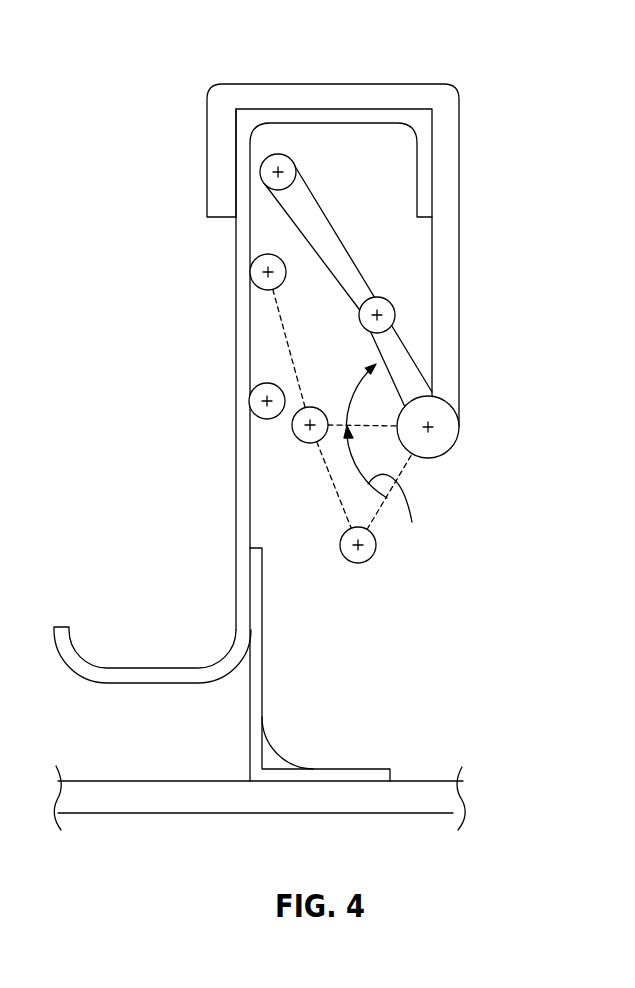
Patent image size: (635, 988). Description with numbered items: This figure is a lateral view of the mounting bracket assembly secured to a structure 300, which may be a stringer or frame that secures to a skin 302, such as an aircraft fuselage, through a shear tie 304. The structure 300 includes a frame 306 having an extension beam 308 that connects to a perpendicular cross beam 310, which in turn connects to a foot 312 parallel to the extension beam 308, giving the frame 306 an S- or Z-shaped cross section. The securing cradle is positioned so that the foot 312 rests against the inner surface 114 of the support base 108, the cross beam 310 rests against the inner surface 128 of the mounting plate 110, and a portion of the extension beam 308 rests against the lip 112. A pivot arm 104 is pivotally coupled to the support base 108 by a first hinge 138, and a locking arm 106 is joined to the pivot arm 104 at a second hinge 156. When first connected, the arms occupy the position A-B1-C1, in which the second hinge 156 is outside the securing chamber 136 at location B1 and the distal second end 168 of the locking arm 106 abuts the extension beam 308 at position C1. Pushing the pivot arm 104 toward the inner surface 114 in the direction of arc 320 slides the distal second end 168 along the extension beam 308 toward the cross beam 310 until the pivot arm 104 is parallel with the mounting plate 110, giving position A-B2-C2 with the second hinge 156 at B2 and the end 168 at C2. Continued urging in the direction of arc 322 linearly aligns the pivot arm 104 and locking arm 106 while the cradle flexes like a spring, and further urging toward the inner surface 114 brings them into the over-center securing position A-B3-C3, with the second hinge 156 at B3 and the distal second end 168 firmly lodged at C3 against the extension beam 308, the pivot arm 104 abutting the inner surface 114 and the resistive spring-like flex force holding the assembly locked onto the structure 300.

The pivot arm 104 is at (403, 372).
The locking arm 106 is at (310, 216).
The support base 108 is at (459, 225).
The mounting plate 110 is at (250, 82).
The lip 112 is at (207, 158).
The inner surface 114 is at (433, 180).
The inner surface 128 is at (358, 117).
The securing chamber 136 is at (298, 148).
The first hinge 138 is at (433, 433).
The second hinge 156 is at (392, 304).
The distal second end 168 is at (265, 159).
The structure 300 is at (233, 528).
The skin 302 is at (177, 800).
The shear tie 304 is at (268, 740).
The frame 306 is at (236, 325).
The extension beam 308 is at (236, 377).
The cross beam 310 is at (338, 117).
The foot 312 is at (423, 150).
The arc 320 is at (402, 517).
The arc 322 is at (352, 394).
The position A is at (458, 438).
The position B1 is at (360, 563).
The position B2 is at (292, 426).
The position B3 is at (390, 301).
The position C1 is at (249, 400).
The position C2 is at (250, 270).
The position C3 is at (261, 180).